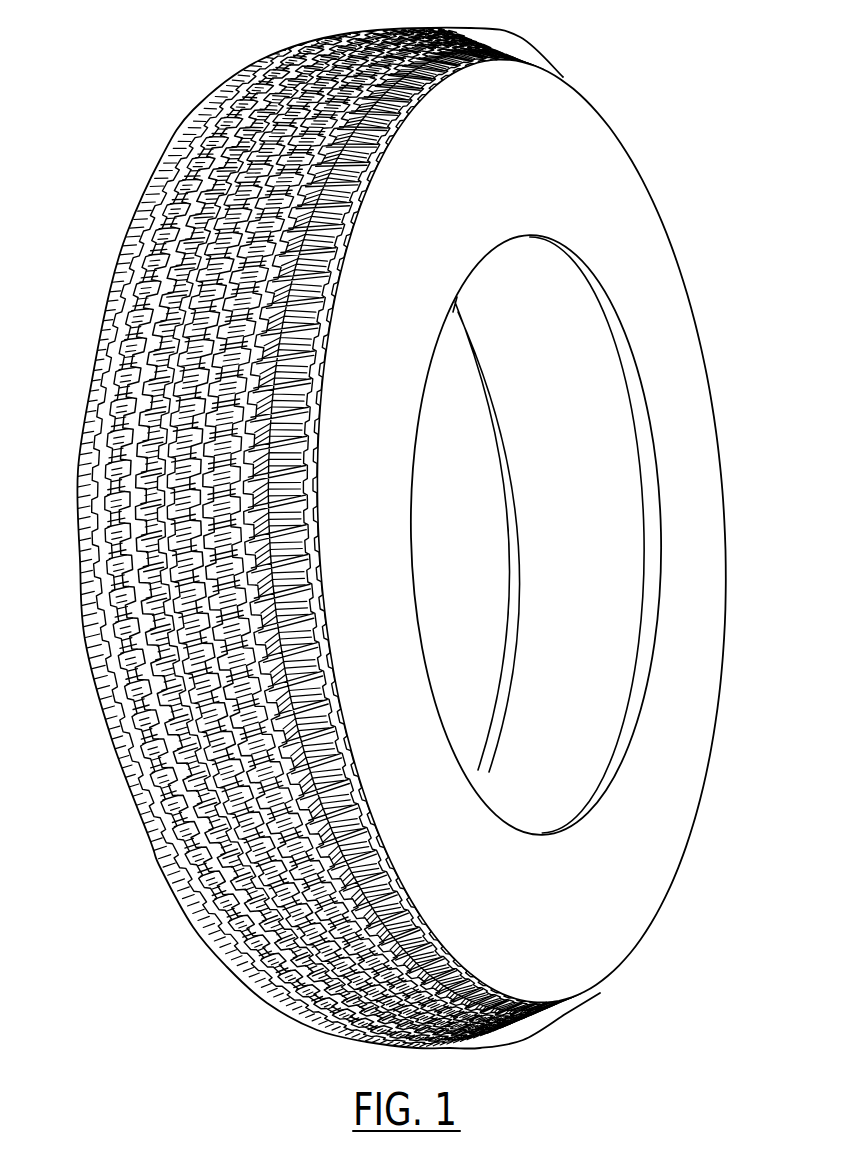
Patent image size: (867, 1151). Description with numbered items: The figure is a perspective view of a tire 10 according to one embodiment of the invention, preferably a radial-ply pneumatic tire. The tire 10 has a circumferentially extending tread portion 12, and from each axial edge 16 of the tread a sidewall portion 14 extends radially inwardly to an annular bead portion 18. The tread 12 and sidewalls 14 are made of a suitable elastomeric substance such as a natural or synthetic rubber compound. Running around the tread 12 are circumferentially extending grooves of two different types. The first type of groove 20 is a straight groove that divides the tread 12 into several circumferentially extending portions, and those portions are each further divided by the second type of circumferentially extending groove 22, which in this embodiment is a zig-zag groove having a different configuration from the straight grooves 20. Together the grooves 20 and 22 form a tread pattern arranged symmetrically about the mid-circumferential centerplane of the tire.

The tire 10 is at (402, 524).
The tread portion 12 is at (326, 524).
The sidewall portion 14 is at (600, 163).
The axial edge 16 is at (560, 73).
The bead portion 18 is at (640, 405).
The straight groove 20 is at (237, 763).
The zig-zag groove 22 is at (197, 710).